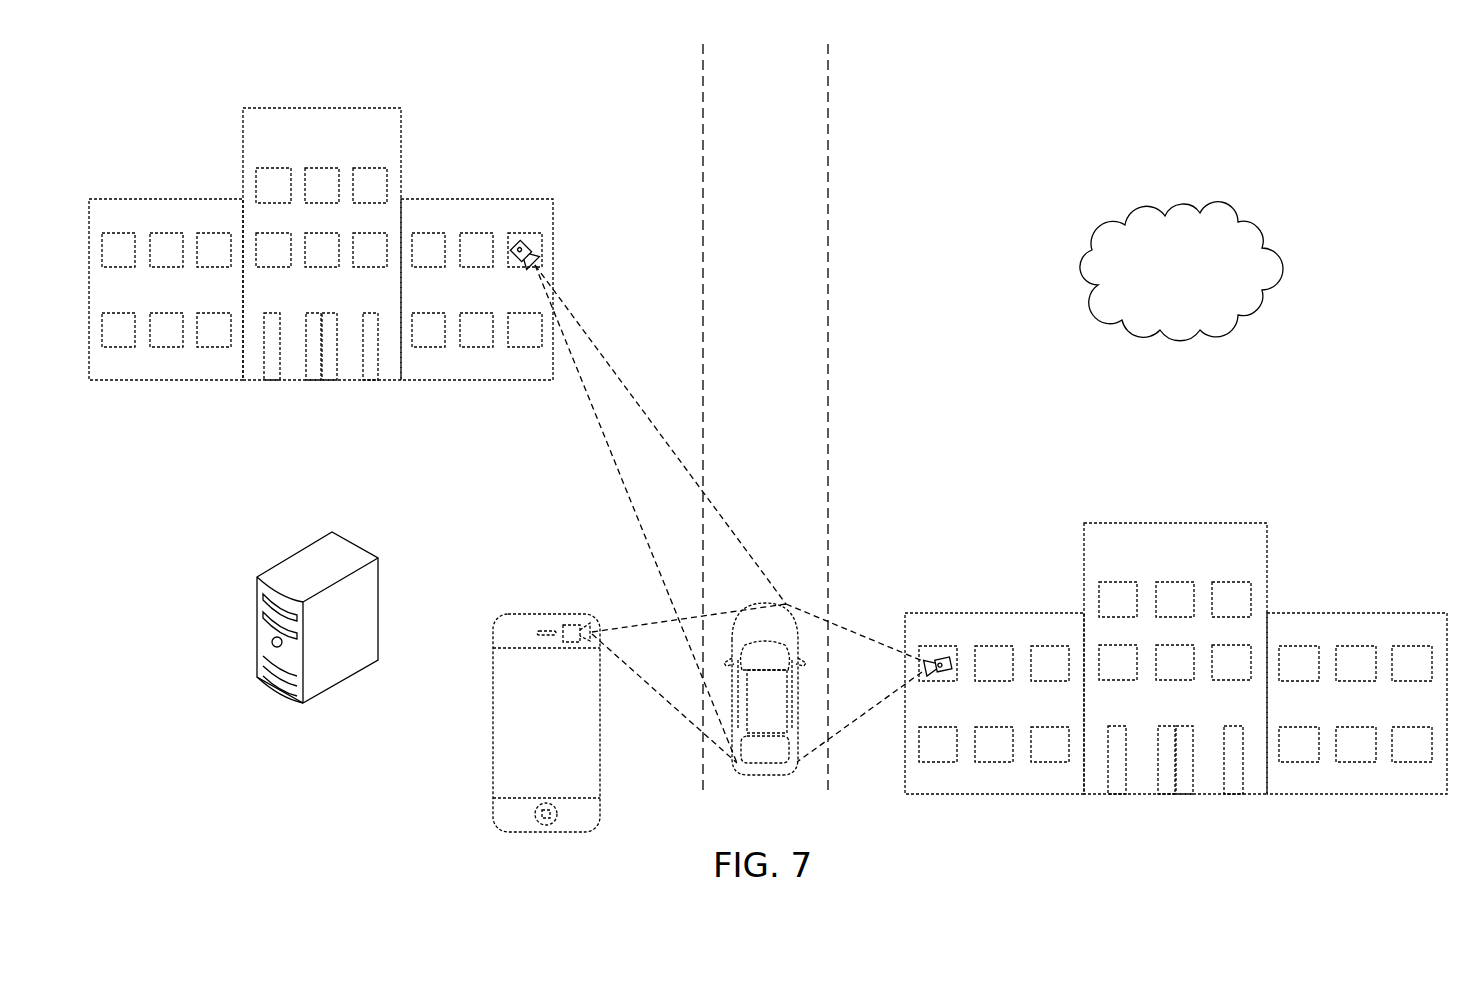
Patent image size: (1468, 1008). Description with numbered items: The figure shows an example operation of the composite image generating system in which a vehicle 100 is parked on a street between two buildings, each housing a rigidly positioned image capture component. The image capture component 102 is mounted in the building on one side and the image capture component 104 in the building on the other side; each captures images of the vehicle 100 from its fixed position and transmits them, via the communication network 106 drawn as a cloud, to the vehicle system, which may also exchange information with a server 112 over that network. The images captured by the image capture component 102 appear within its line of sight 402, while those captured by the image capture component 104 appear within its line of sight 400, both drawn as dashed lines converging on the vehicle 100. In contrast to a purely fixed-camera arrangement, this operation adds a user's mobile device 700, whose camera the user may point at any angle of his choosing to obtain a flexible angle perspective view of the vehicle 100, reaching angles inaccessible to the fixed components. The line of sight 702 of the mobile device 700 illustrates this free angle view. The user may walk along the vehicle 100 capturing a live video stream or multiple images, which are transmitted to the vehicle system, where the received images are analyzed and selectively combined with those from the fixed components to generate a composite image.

The vehicle 100 is at (762, 778).
The image capture component 102 is at (942, 658).
The image capture component 104 is at (528, 240).
The communication network 106 is at (1197, 212).
The server 112 is at (296, 555).
The line of sight 400 is at (636, 408).
The line of sight 402 is at (852, 645).
The mobile device 700 is at (493, 723).
The line of sight 702 is at (660, 690).